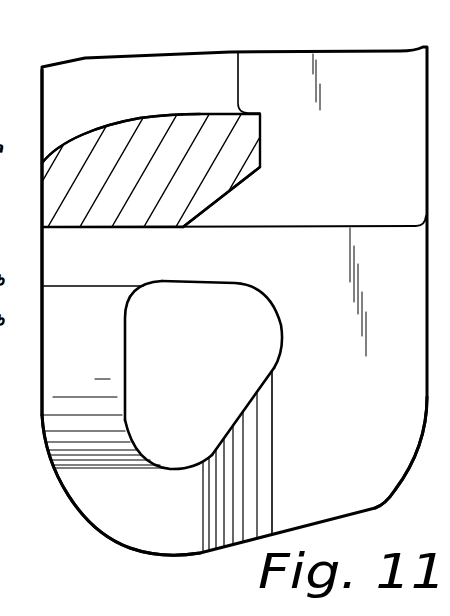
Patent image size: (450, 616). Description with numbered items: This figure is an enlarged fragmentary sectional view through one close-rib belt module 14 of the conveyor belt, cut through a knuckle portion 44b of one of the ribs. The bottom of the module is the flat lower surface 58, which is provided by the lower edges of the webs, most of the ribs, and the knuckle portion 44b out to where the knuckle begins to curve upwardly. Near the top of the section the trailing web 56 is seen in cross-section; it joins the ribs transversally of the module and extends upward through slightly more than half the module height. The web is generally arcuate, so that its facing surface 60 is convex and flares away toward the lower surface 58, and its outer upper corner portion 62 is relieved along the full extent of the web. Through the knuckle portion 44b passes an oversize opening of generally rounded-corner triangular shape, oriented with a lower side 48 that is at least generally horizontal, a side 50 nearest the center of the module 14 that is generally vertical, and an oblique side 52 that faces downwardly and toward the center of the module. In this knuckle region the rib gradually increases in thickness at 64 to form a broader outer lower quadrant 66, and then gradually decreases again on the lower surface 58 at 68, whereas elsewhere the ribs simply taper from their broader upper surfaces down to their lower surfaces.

The close-rib belt module 14 is at (417, 32).
The flat lower surface 58 is at (40, 98).
The facing surfaces 60 is at (94, 129).
The trailing web 56 is at (250, 142).
The outer upper corner portion 62 is at (232, 185).
The side nearest the center of the module 50 is at (203, 285).
The lower side 48 is at (127, 360).
The oblique side 52 is at (258, 400).
The gradual increase in rib thickness 64 is at (272, 481).
The gradual decrease in rib thickness 68 is at (55, 474).
The broader outer lower quadrant 66 is at (95, 516).
The knuckle portion 44b is at (392, 477).